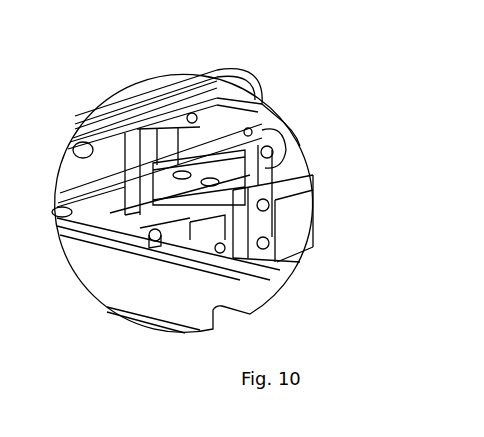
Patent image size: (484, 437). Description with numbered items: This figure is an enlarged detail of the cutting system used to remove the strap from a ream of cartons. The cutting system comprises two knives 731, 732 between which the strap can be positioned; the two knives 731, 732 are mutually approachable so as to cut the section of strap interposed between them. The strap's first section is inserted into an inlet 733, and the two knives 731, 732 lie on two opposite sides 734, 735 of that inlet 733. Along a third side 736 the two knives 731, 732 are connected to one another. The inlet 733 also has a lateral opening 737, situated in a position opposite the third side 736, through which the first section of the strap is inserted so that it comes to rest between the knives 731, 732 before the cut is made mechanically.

The knife 731 is at (226, 133).
The side of the inlet 734 is at (210, 187).
The knife 732 is at (132, 132).
The side of the inlet 735 is at (164, 214).
The inlet 733 is at (175, 238).
The third side 736 is at (241, 227).
The lateral opening 737 is at (124, 210).